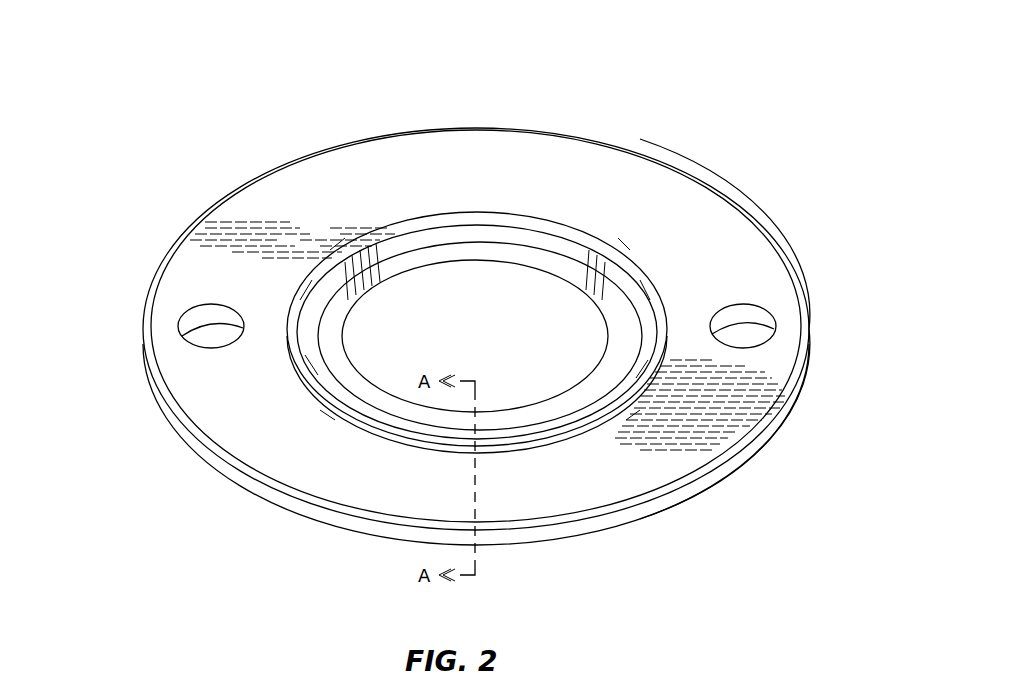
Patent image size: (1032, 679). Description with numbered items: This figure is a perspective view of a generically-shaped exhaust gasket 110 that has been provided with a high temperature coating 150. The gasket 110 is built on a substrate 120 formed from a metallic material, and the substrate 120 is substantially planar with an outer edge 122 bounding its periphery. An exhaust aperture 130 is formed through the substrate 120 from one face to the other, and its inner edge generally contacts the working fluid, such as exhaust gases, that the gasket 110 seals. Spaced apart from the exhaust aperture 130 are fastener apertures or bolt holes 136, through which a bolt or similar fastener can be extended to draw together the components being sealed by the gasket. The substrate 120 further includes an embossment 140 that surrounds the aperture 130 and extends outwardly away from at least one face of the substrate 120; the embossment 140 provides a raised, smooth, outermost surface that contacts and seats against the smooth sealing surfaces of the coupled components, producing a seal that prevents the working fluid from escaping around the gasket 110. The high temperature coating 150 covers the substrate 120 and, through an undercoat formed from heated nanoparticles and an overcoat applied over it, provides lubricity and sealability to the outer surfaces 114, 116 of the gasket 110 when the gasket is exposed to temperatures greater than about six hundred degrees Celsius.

The gasket 110 is at (150, 172).
The outer surface 114 is at (315, 199).
The outer surface 116 is at (272, 528).
The substrate 120 is at (766, 457).
The outer edge 122 is at (733, 207).
The exhaust aperture 130 is at (475, 327).
The bolt holes 136 is at (203, 335).
The embossment 140 is at (636, 373).
The high temperature coating 150 is at (578, 170).